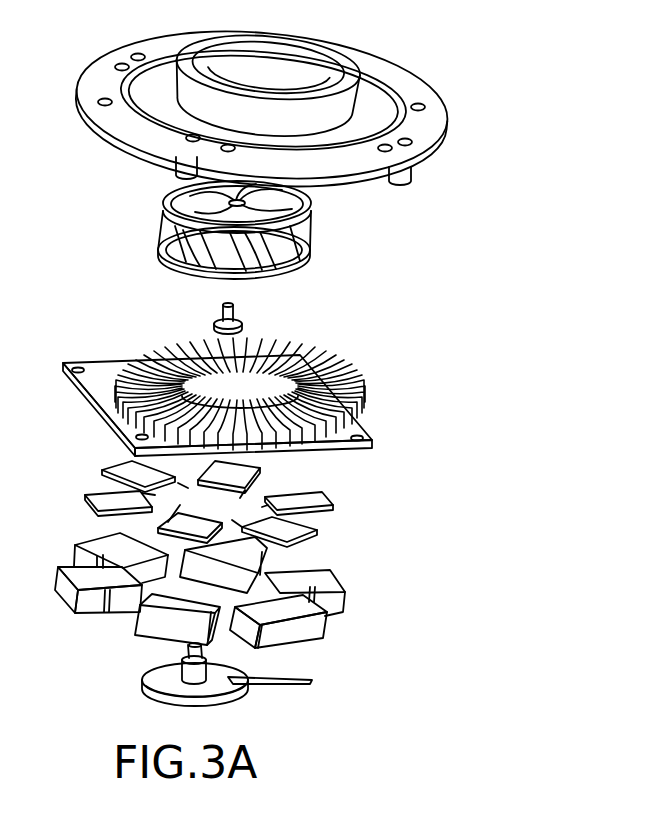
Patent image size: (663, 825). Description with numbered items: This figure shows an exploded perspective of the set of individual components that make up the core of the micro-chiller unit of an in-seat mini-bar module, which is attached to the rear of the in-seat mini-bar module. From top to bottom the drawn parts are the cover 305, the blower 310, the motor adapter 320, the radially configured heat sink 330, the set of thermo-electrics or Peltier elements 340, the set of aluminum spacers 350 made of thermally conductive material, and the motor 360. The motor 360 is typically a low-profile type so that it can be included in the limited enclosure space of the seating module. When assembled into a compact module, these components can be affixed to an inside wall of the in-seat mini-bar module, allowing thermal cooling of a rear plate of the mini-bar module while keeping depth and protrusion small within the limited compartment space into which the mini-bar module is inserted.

The cover 305 is at (464, 108).
The blower 310 is at (330, 246).
The motor adapter 320 is at (265, 322).
The heat sink 330 is at (392, 424).
The set of thermo-electrics 340 is at (365, 528).
The set of aluminum spacers 350 is at (355, 630).
The motor 360 is at (305, 718).